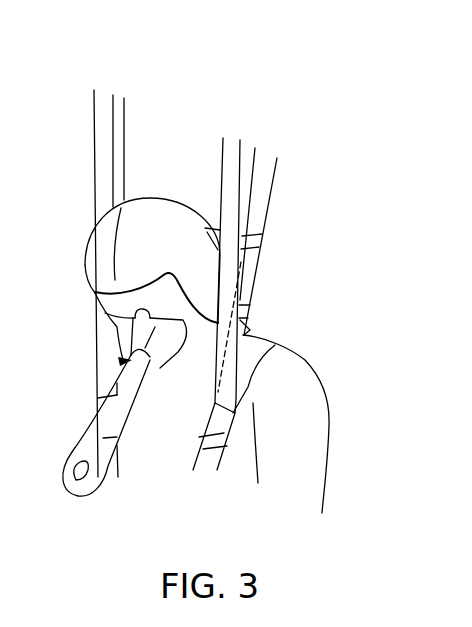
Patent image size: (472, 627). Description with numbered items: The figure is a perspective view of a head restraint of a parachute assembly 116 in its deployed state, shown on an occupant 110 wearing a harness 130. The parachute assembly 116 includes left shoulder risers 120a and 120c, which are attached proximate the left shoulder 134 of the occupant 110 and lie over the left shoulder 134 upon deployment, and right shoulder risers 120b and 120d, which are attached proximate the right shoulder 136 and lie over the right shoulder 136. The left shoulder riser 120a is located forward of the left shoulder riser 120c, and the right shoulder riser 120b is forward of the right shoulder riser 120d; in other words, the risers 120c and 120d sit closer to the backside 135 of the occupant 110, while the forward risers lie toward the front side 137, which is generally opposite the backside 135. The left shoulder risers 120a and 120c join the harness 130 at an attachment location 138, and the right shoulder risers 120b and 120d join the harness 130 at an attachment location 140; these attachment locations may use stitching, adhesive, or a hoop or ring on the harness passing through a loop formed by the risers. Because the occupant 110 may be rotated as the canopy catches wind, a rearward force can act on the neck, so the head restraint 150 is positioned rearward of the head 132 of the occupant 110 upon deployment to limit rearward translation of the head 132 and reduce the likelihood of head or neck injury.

The occupant 110 is at (70, 240).
The parachute assembly 116 is at (92, 67).
The left shoulder riser 120a is at (248, 152).
The right shoulder riser 120b is at (100, 130).
The left shoulder riser 120c is at (258, 230).
The right shoulder riser 120d is at (128, 148).
The harness 130 is at (212, 431).
The head 132 is at (153, 252).
The left shoulder 134 is at (301, 410).
The backside 135 is at (340, 409).
The right shoulder 136 is at (96, 382).
The front side 137 is at (186, 401).
The attachment location 138 is at (233, 420).
The attachment location 140 is at (90, 397).
The head restraint 150 is at (207, 216).